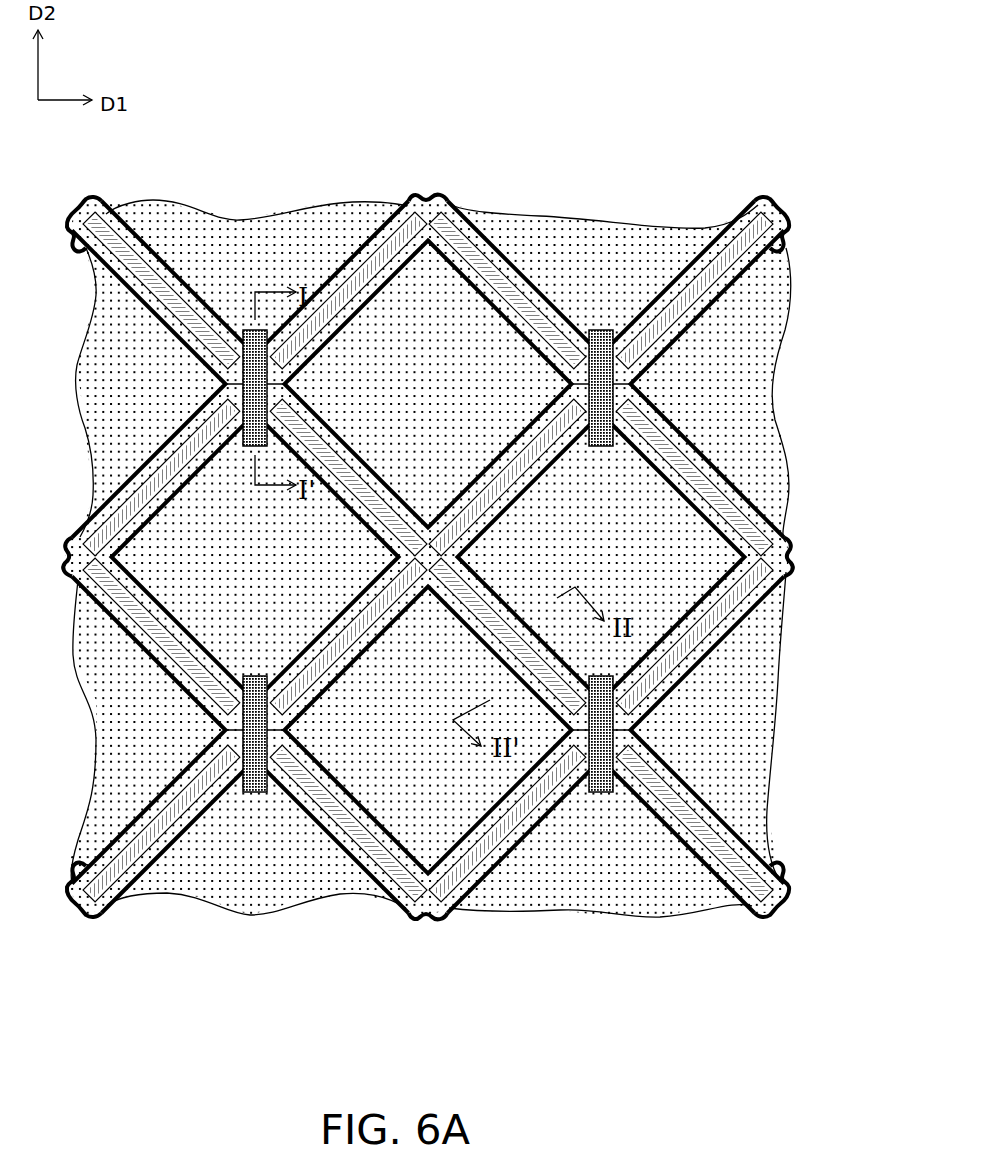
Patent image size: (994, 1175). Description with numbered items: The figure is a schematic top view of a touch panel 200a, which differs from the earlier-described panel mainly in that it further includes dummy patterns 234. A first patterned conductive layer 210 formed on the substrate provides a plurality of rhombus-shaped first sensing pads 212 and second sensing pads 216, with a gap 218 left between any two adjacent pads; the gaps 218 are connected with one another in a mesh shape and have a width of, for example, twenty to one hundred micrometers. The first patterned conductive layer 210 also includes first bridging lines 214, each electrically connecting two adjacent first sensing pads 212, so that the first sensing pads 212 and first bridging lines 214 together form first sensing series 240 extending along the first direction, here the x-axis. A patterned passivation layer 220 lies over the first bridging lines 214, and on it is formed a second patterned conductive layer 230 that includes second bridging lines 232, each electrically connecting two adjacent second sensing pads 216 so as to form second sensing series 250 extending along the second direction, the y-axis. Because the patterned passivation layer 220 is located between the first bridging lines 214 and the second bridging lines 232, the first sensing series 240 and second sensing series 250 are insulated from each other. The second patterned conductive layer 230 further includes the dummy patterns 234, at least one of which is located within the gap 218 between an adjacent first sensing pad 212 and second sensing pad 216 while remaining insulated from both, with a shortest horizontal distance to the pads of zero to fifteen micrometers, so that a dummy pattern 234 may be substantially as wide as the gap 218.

The touch panel 200a is at (406, 553).
The first patterned conductive layer 210 is at (406, 553).
The first sensing pads 212 is at (112, 428).
The first bridging lines 214 is at (275, 392).
The second sensing pads 216 is at (328, 228).
The gap 218 is at (499, 266).
The patterned passivation layer 220 is at (776, 210).
The second patterned conductive layer 230 is at (414, 435).
The second bridging lines 232 is at (255, 328).
The dummy patterns 234 is at (130, 240).
The first sensing series 240 is at (406, 540).
The second sensing series 250 is at (400, 553).